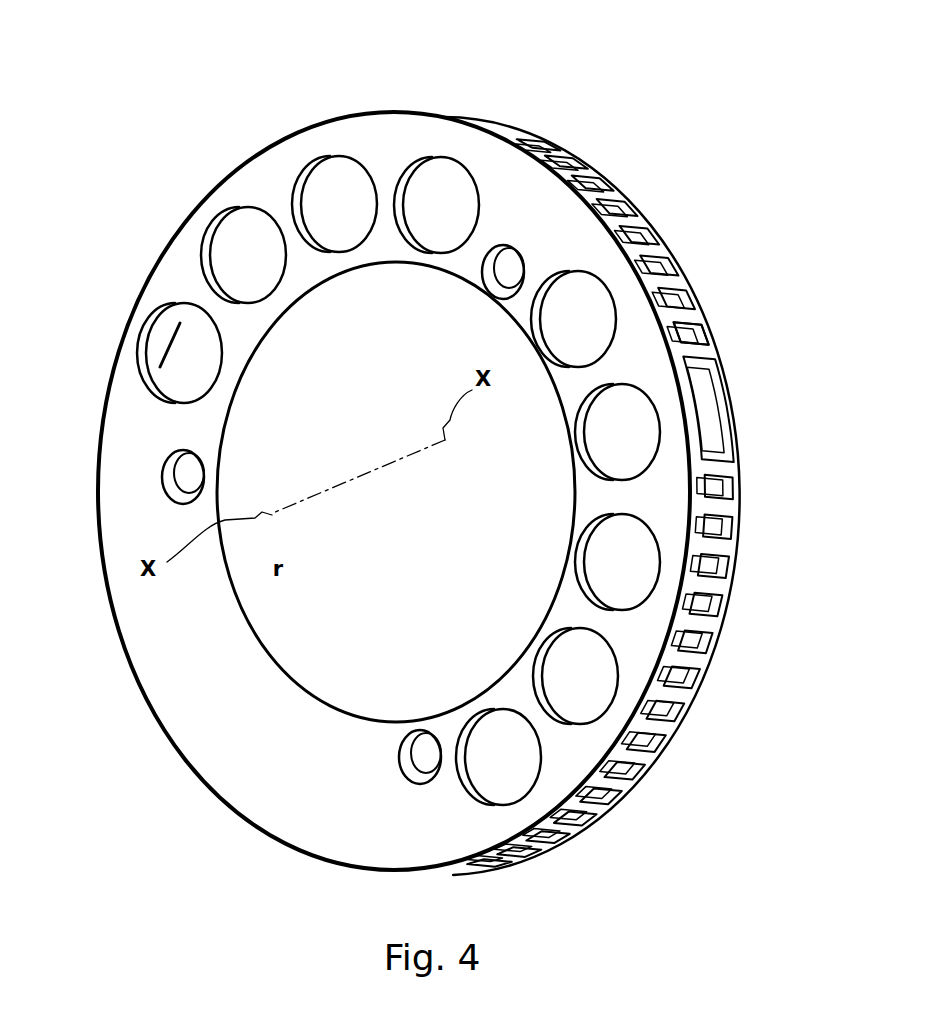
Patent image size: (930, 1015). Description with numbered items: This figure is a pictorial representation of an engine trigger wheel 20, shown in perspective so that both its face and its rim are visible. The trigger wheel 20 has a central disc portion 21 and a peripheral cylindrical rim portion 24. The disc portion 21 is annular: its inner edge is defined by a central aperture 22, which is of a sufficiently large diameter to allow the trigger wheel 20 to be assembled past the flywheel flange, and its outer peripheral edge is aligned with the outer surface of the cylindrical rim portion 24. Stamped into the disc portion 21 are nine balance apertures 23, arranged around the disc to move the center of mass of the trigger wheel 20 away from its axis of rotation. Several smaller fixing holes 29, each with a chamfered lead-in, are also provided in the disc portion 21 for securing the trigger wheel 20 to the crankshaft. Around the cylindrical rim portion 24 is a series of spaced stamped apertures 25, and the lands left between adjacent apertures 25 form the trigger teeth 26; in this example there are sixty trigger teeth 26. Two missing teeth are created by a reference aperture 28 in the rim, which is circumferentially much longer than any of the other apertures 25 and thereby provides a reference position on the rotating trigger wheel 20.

The engine trigger wheel 20 is at (252, 147).
The central disc portion 21 is at (308, 260).
The central aperture 22 is at (396, 492).
The balance apertures 23 is at (540, 328).
The peripheral cylindrical rim portion 24 is at (600, 165).
The stamped apertures 25 is at (660, 262).
The trigger teeth 26 is at (723, 310).
The reference aperture 28 is at (715, 392).
The fixing holes 29 is at (505, 268).